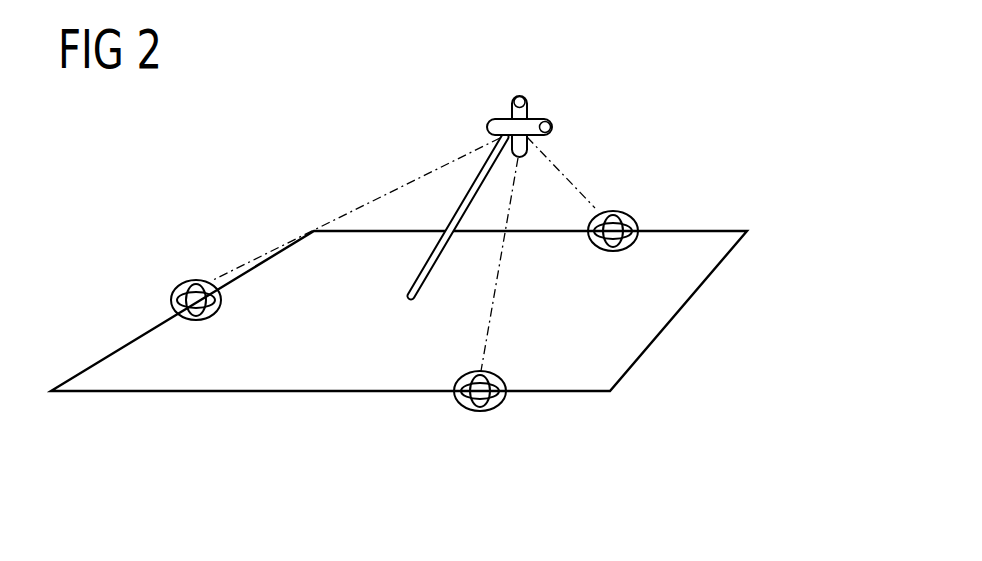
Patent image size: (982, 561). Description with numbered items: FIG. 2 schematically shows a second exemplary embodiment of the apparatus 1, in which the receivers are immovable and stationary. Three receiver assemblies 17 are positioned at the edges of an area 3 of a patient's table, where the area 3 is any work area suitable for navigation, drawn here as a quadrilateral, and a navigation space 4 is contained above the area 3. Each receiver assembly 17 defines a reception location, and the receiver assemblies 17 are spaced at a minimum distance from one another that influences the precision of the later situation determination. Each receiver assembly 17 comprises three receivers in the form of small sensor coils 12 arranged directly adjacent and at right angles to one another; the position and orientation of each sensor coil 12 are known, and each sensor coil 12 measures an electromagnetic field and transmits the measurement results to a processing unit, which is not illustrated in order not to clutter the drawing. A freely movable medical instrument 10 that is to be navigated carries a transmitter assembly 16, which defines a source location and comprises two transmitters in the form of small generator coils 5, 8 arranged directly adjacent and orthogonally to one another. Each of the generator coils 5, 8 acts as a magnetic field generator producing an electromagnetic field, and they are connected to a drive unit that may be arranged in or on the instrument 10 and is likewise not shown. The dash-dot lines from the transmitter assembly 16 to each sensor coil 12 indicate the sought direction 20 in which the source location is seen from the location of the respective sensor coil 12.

The apparatus 1 is at (737, 143).
The area 3 is at (610, 363).
The navigation space 4 is at (338, 273).
The generator coil 5 is at (519, 95).
The generator coil 8 is at (535, 123).
The medical instrument 10 is at (440, 258).
The sensor coil 12 is at (221, 298).
The transmitter assembly 16 is at (485, 81).
The receiver assembly 17 is at (173, 272).
The direction 20 is at (388, 193).